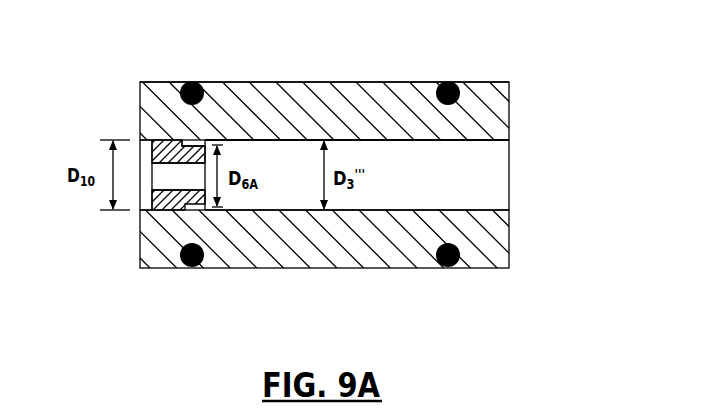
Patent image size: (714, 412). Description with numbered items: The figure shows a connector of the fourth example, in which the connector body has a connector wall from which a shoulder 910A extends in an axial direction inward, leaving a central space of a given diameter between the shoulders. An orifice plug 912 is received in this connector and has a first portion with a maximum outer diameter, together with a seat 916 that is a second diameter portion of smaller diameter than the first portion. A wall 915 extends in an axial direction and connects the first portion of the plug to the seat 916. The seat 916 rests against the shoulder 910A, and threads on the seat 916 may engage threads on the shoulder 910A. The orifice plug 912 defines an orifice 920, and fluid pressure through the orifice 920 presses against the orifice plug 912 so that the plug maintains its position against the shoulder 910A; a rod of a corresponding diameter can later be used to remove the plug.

The orifice plug 912 is at (163, 140).
The wall 915 is at (187, 142).
The seat 916 is at (197, 140).
The shoulder 910A is at (192, 207).
The orifice 920 is at (163, 178).